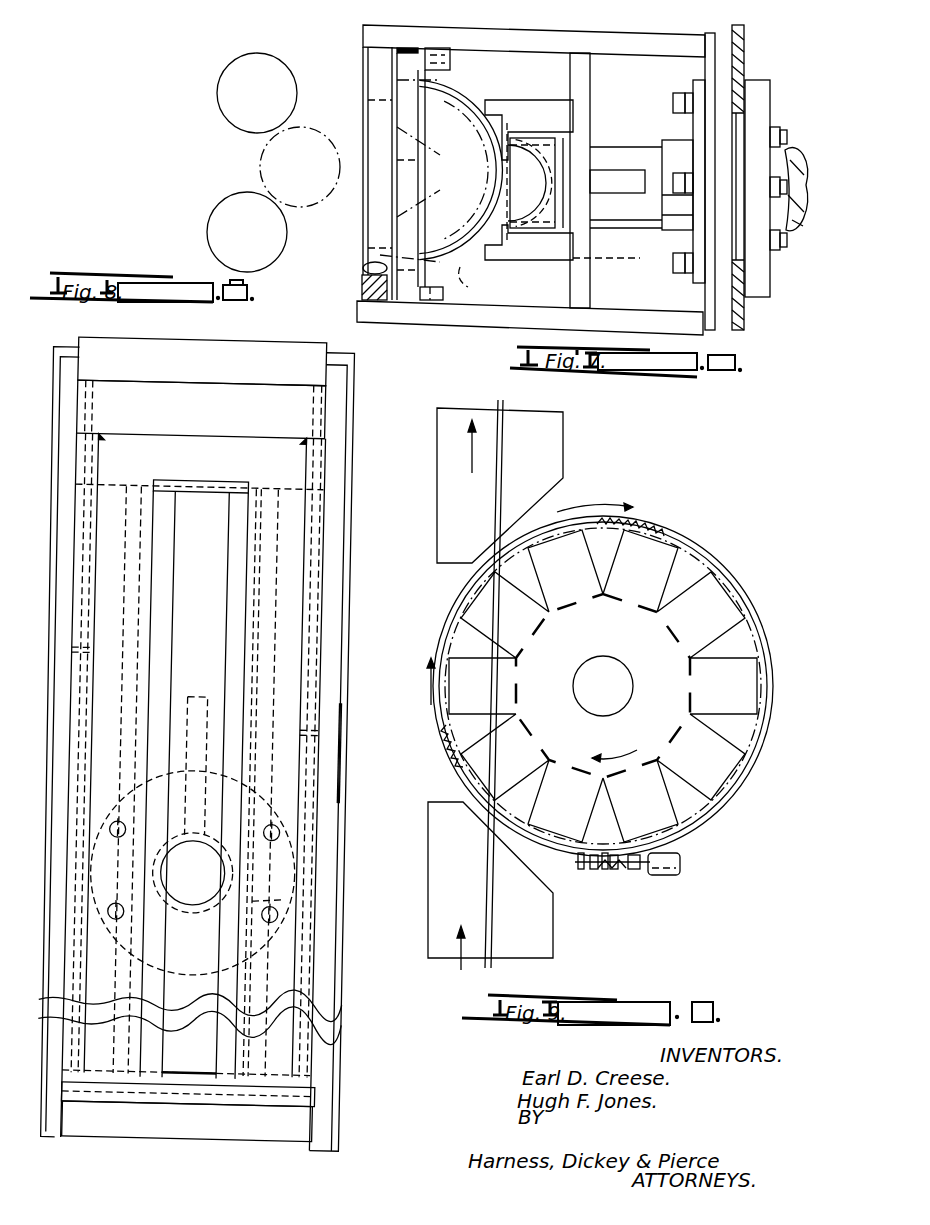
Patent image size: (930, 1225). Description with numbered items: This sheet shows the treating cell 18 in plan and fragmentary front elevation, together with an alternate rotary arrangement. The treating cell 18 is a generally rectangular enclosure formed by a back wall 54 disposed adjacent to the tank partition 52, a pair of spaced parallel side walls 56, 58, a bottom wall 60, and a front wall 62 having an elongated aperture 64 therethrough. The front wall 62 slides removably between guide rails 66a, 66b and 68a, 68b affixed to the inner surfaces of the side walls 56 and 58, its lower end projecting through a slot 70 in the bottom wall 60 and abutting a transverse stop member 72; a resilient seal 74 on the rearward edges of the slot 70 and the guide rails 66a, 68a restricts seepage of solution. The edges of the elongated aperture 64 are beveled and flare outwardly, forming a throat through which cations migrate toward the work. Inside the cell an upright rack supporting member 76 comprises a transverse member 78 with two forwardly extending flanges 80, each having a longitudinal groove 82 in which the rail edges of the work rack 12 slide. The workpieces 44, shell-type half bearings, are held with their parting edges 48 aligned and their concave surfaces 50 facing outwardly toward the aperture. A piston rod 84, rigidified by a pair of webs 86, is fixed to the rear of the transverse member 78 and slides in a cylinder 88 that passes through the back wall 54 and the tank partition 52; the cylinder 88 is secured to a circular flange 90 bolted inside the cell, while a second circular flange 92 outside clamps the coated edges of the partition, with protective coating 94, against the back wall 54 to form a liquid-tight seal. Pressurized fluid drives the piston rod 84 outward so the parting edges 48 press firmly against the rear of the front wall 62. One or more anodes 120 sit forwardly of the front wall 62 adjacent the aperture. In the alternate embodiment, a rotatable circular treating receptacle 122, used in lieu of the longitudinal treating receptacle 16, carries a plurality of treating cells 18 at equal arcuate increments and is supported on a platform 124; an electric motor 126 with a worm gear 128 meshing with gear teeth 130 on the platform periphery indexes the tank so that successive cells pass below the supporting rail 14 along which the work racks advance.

In FIG. 7, the work rack 12 is at (580, 118).
In FIG. 9, the supporting rail 14 is at (487, 880).
In FIG. 9, the guide blocks 16 is at (543, 457).
In FIG. 9, the treating cell 18 is at (720, 612).
In FIG. 7, the workpieces 44 is at (477, 283).
In FIG. 7, the parting edges 48 is at (445, 78).
In FIG. 7, the concave surfaces 50 is at (464, 170).
In FIG. 7, the tank partition 52 is at (745, 62).
In FIG. 7, the back wall 54 is at (722, 70).
In FIG. 8, the back wall 54 is at (345, 766).
In FIG. 7, the side wall 56 is at (558, 40).
In FIG. 8, the side wall 56 is at (55, 769).
In FIG. 7, the side wall 58 is at (505, 320).
In FIG. 8, the side wall 58 is at (330, 789).
In FIG. 7, the bottom wall 60 is at (650, 60).
In FIG. 8, the bottom wall 60 is at (308, 1096).
In FIG. 7, the front wall 62 is at (405, 74).
In FIG. 8, the front wall 62 is at (288, 970).
In FIG. 7, the elongated aperture 64 is at (432, 193).
In FIG. 8, the elongated aperture 64 is at (212, 1058).
In FIG. 7, the guide rail 66a is at (366, 58).
In FIG. 8, the guide rail 66a is at (80, 677).
In FIG. 7, the guide rail 66b is at (452, 60).
In FIG. 7, the guide rail 68a is at (360, 288).
In FIG. 8, the guide rail 68a is at (303, 735).
In FIG. 7, the guide rail 68b is at (438, 300).
In FIG. 7, the slot 70 is at (410, 158).
In FIG. 8, the transverse stop member 72 is at (236, 1127).
In FIG. 7, the resilient gasket or seal 74 is at (400, 58).
In FIG. 8, the resilient gasket or seal 74 is at (67, 640).
In FIG. 7, the rack supporting member 76 is at (620, 218).
In FIG. 8, the rack supporting member 76 is at (267, 485).
In FIG. 7, the transverse member 78 is at (608, 258).
In FIG. 8, the transverse member 78 is at (284, 518).
In FIG. 7, the forwardly extending flanges 80 is at (535, 108).
In FIG. 8, the forwardly extending flanges 80 is at (230, 562).
In FIG. 7, the longitudinally extending groove 82 is at (508, 115).
In FIG. 8, the longitudinally extending groove 82 is at (209, 618).
In FIG. 7, the piston rod 84 is at (638, 153).
In FIG. 8, the piston rod 84 is at (207, 882).
In FIG. 7, the webs 86 is at (604, 180).
In FIG. 8, the webs 86 is at (195, 695).
In FIG. 7, the sleeve or cylinder 88 is at (665, 206).
In FIG. 8, the sleeve or cylinder 88 is at (172, 858).
In FIG. 7, the circular flange 90 is at (697, 283).
In FIG. 8, the circular flange 90 is at (288, 896).
In FIG. 7, the second circular flange 92 is at (760, 270).
In FIG. 7, the protective coating 94 is at (743, 308).
In FIG. 7, the anodes 120 is at (263, 157).
In FIG. 9, the rotatable circular treating receptacle 122 is at (690, 567).
In FIG. 9, the platform 124 is at (715, 822).
In FIG. 9, the electric motor 126 is at (682, 862).
In FIG. 9, the worm gear 128 is at (605, 868).
In FIG. 9, the gear teeth 130 is at (575, 856).